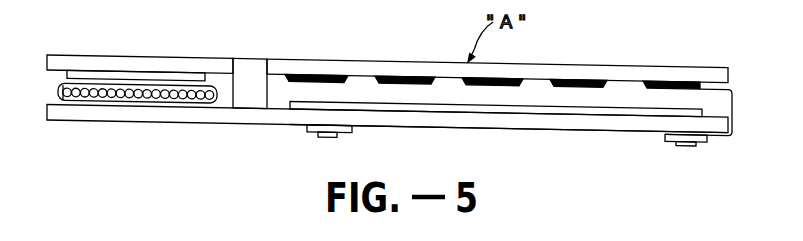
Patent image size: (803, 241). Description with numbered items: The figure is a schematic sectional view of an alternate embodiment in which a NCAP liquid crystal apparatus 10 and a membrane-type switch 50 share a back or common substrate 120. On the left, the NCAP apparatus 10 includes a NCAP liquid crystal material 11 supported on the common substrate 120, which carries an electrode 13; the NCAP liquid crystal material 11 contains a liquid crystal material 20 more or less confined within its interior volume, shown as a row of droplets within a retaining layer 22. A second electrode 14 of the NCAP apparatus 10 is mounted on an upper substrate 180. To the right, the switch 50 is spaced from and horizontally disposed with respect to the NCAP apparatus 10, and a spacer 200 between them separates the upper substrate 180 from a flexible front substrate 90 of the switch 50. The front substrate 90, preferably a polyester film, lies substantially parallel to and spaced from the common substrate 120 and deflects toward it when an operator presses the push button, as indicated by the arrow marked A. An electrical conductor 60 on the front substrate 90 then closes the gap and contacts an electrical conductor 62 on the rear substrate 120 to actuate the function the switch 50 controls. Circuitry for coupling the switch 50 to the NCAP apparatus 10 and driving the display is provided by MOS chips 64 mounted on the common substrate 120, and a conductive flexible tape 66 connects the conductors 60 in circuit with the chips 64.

The NCAP liquid crystal apparatus 10 is at (196, 52).
The NCAP liquid crystal material 11 is at (58, 95).
The electrode 13 is at (160, 103).
The second electrode 14 is at (83, 69).
The liquid crystal material 20 is at (77, 100).
The retainer wall 22 is at (88, 98).
The membrane-type switch 50 is at (661, 64).
The electrical conductor 60 is at (312, 78).
The electrical conductor 62 is at (611, 108).
The MOS chips 64 is at (334, 133).
The conductive flexible tape 66 is at (733, 110).
The flexible front substrate 90 is at (583, 66).
The common substrate 120 is at (498, 129).
The substrate 180 is at (111, 61).
The spacer 200 is at (253, 63).